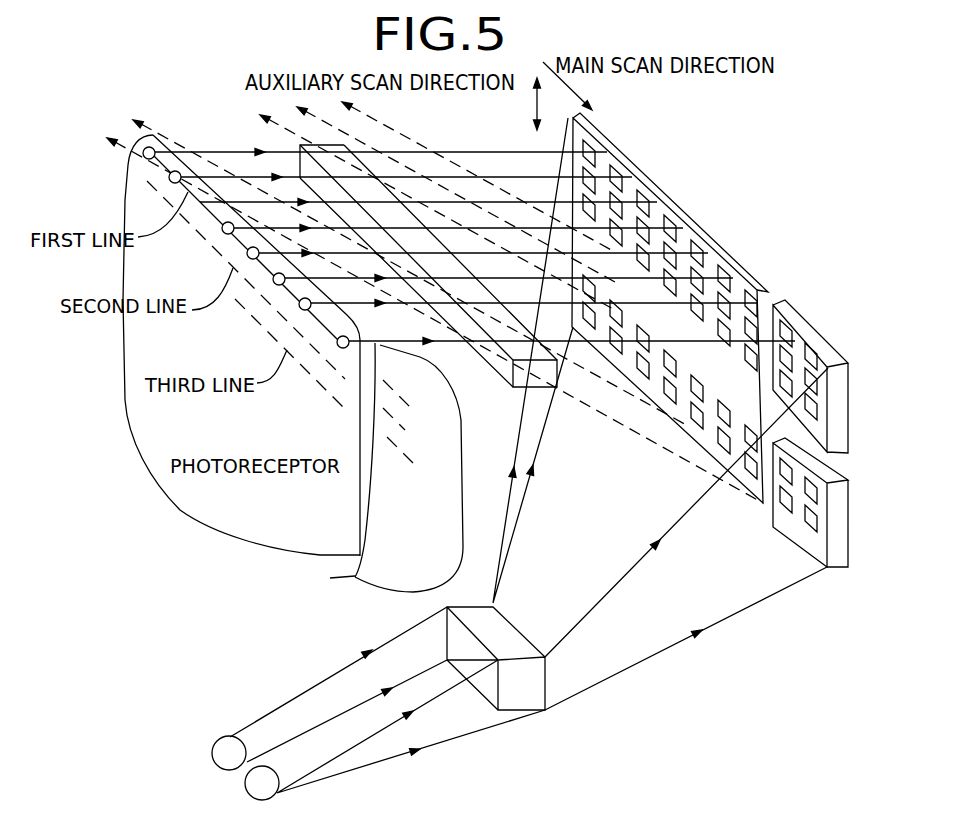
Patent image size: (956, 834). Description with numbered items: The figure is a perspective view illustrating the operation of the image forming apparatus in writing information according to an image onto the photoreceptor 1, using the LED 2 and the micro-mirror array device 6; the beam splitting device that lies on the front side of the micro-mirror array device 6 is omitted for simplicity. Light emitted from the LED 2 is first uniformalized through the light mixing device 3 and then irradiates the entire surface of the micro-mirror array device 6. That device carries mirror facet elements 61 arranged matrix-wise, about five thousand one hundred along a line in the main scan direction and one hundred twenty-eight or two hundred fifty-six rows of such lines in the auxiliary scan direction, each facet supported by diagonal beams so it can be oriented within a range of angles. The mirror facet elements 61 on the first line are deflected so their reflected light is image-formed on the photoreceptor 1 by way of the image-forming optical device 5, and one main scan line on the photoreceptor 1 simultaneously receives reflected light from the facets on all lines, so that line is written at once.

The photoreceptor 1 is at (333, 553).
The LED 2 is at (246, 784).
The light mixing device 3 is at (520, 702).
The image-forming optical device 5 is at (537, 388).
The micro-mirror array device 6 is at (640, 160).
The mirror facet element 61 is at (720, 258).